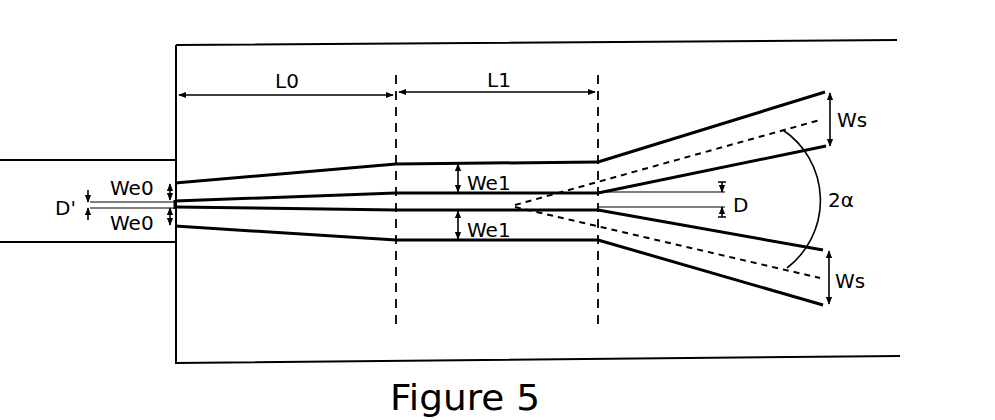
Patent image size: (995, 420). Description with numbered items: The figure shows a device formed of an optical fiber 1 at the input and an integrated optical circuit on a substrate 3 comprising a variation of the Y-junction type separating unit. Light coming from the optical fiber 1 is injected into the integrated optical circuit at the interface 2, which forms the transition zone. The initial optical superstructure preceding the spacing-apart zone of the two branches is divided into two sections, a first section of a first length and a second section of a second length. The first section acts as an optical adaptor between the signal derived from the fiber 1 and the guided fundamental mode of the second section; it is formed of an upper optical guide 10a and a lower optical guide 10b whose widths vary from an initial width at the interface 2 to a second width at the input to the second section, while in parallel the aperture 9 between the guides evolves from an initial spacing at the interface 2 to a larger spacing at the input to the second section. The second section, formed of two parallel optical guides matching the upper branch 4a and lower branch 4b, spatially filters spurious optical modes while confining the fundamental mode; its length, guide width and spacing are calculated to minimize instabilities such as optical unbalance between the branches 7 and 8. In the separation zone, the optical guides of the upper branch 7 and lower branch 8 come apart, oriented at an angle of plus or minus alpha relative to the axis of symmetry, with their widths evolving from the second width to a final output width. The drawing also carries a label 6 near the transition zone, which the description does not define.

The optical fiber 1 is at (100, 173).
The interface 2 is at (175, 227).
The substrate 3 is at (210, 83).
The upper branch 4a is at (426, 180).
The lower branch 4b is at (428, 228).
The tip of branch 6 is at (179, 228).
The upper branch 7 is at (728, 137).
The lower branch 8 is at (732, 267).
The aperture 9 is at (420, 203).
The upper optical guide 10a is at (253, 193).
The lower optical guide 10b is at (252, 216).